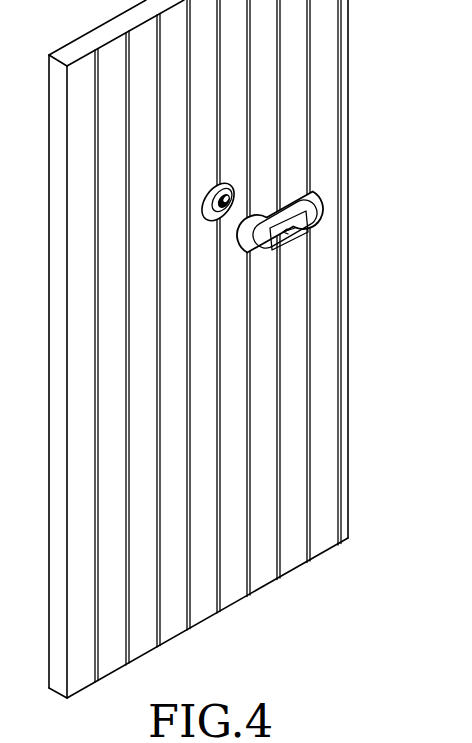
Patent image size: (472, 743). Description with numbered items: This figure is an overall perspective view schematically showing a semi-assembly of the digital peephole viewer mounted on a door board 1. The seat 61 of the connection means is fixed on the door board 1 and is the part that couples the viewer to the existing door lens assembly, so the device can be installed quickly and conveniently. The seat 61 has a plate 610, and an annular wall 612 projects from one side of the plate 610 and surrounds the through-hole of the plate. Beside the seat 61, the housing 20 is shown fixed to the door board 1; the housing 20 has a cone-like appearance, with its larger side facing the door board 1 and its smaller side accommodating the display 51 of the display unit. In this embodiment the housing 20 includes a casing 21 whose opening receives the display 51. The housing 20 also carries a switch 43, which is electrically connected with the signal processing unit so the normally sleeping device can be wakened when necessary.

The door board 1 is at (333, 109).
The housing 20 is at (310, 233).
The casing 21 is at (318, 197).
The switch 43 is at (287, 250).
The display 51 is at (302, 233).
The seat 61 is at (218, 186).
The plate 610 is at (206, 216).
The annular wall 612 is at (231, 187).